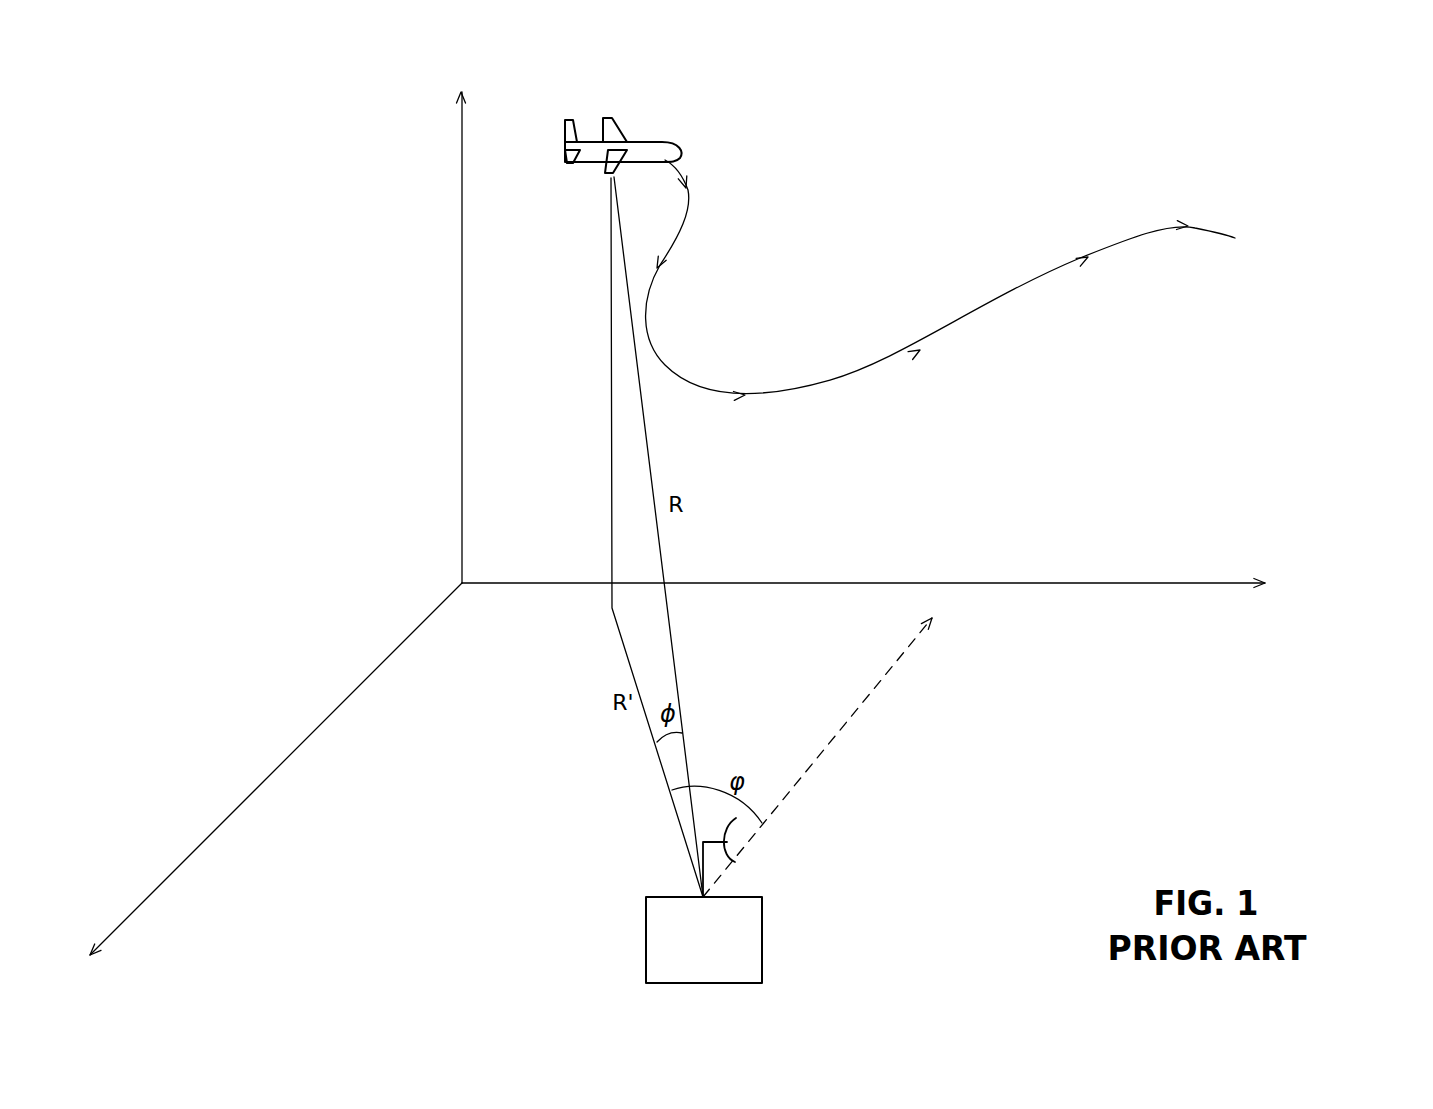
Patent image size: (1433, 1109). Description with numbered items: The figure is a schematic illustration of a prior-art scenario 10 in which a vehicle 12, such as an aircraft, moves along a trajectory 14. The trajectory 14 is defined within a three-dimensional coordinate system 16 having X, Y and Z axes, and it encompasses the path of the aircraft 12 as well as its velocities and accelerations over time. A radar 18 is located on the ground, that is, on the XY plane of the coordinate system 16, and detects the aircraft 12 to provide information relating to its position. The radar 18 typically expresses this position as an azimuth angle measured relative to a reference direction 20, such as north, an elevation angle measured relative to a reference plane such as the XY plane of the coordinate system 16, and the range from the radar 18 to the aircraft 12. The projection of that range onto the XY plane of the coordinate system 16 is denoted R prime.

The scenario 10 is at (1320, 322).
The vehicle 12 is at (657, 141).
The trajectory 14 is at (1103, 250).
The three-dimensional coordinate system 16 is at (461, 468).
The radar 18 is at (646, 949).
The reference direction 20 is at (877, 688).